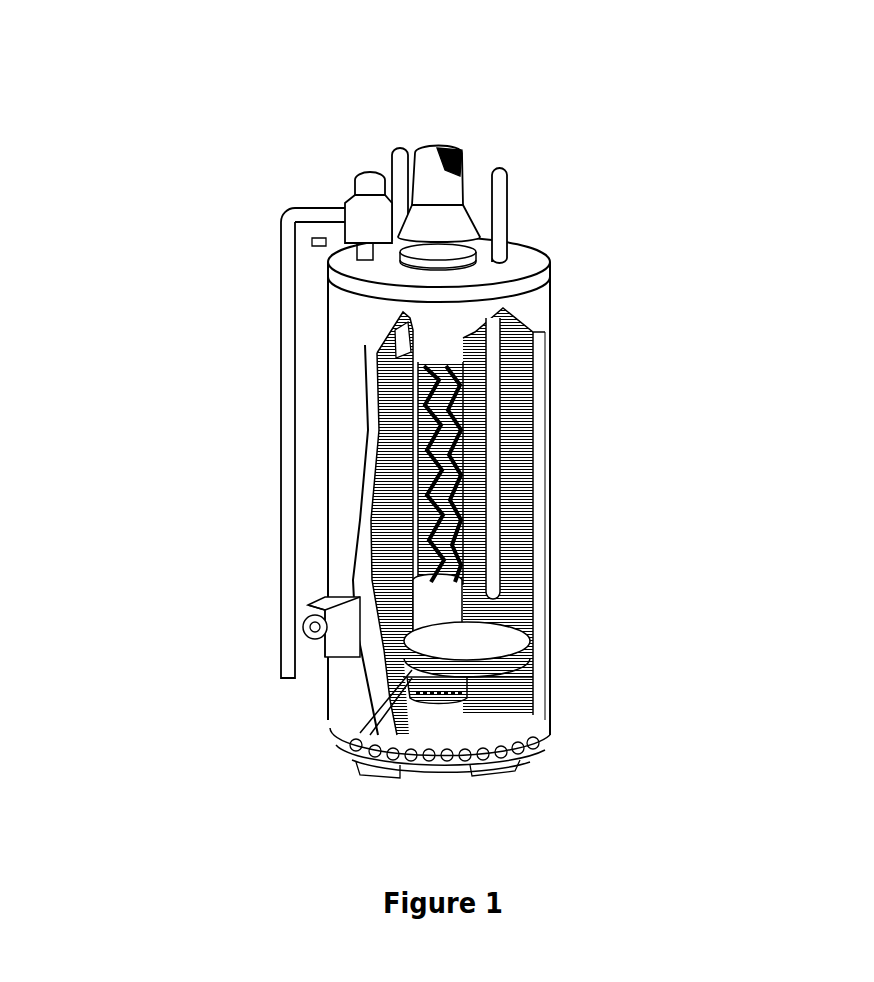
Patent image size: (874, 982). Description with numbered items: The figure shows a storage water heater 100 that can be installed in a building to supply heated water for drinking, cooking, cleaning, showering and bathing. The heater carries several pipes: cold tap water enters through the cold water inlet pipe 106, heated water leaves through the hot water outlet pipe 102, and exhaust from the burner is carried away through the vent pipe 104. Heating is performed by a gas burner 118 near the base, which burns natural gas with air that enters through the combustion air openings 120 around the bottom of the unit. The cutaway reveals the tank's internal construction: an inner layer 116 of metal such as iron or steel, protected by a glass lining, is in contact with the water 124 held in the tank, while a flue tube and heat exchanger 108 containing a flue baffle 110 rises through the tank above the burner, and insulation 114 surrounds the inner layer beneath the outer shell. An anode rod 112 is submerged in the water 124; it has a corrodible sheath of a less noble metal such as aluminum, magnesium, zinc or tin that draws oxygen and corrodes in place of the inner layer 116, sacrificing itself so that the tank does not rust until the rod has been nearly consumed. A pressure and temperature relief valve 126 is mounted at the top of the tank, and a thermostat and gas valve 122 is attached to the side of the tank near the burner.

The storage water heater 100 is at (272, 103).
The hot water outlet pipe 102 is at (400, 148).
The vent pipe 104 is at (462, 158).
The cold water inlet pipe 106 is at (508, 208).
The flue tube / heat exchanger 108 is at (437, 338).
The flue baffle 110 is at (445, 413).
The anode rod 112 is at (502, 462).
The insulation 114 is at (526, 508).
The inner layer 116 is at (536, 569).
The gas burner 118 is at (472, 692).
The combustion air openings 120 is at (542, 748).
The thermostat and gas valve 122 is at (306, 608).
The water 124 is at (392, 471).
The pressure/temperature relief valve 126 is at (352, 184).